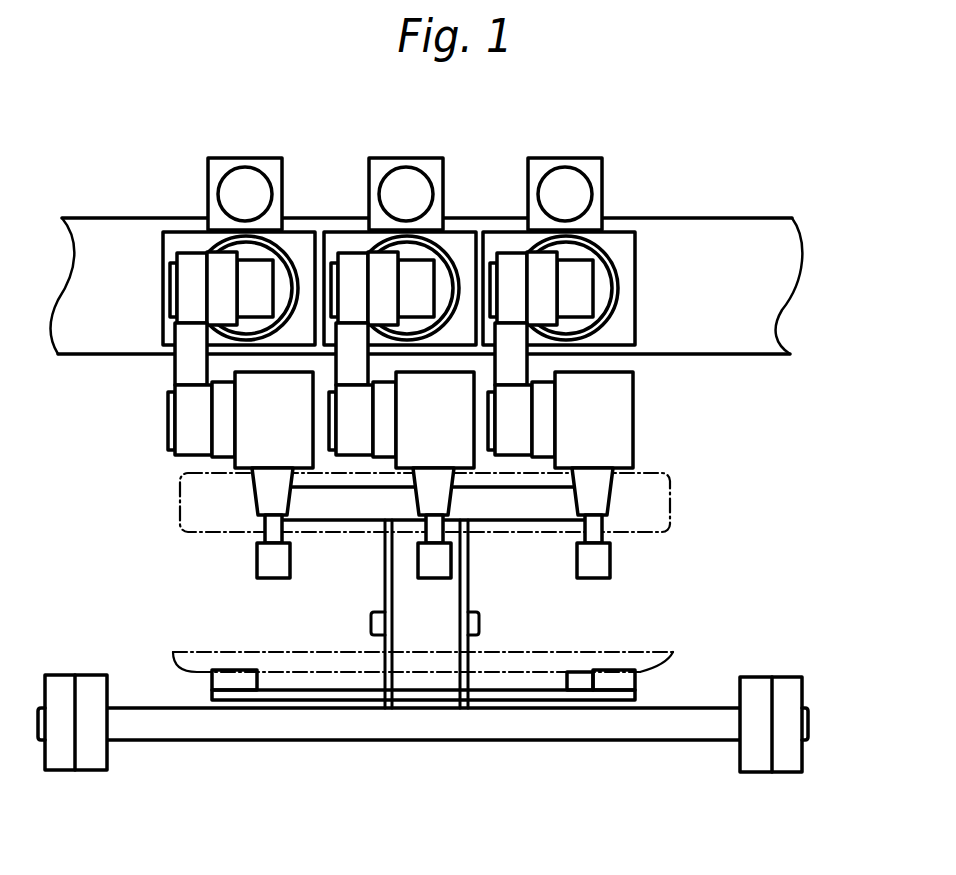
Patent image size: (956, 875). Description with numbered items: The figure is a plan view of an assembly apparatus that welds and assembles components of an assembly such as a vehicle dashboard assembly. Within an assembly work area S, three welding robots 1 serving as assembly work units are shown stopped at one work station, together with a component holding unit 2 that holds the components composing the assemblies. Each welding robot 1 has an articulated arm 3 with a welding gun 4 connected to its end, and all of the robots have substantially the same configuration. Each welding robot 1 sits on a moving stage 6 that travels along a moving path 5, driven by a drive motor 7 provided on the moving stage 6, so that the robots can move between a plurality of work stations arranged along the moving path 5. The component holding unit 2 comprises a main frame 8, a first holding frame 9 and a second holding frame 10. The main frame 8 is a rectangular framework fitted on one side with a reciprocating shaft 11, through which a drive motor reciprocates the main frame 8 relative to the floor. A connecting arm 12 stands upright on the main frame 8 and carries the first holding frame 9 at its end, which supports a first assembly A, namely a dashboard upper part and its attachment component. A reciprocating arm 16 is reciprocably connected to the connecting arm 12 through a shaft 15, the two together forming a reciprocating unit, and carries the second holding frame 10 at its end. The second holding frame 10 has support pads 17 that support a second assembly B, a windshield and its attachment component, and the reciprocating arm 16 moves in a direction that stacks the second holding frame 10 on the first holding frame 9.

The welding robot 1 is at (247, 447).
The component holding unit 2 is at (446, 761).
The articulated arm 3 is at (603, 480).
The welding gun 4 is at (607, 560).
The moving path 5 is at (719, 231).
The moving stage 6 is at (620, 238).
The drive motor 7 is at (562, 172).
The main frame 8 is at (622, 740).
The first holding frame 9 is at (524, 513).
The second holding frame 10 is at (568, 687).
The reciprocating shaft 11 is at (808, 722).
The connecting arm 12 is at (382, 568).
The shaft 15 is at (371, 622).
The reciprocating arm 16 is at (475, 660).
The support pads 17 is at (235, 675).
The first assembly A is at (670, 514).
The second assembly B is at (673, 652).
The assembly work area S is at (770, 488).